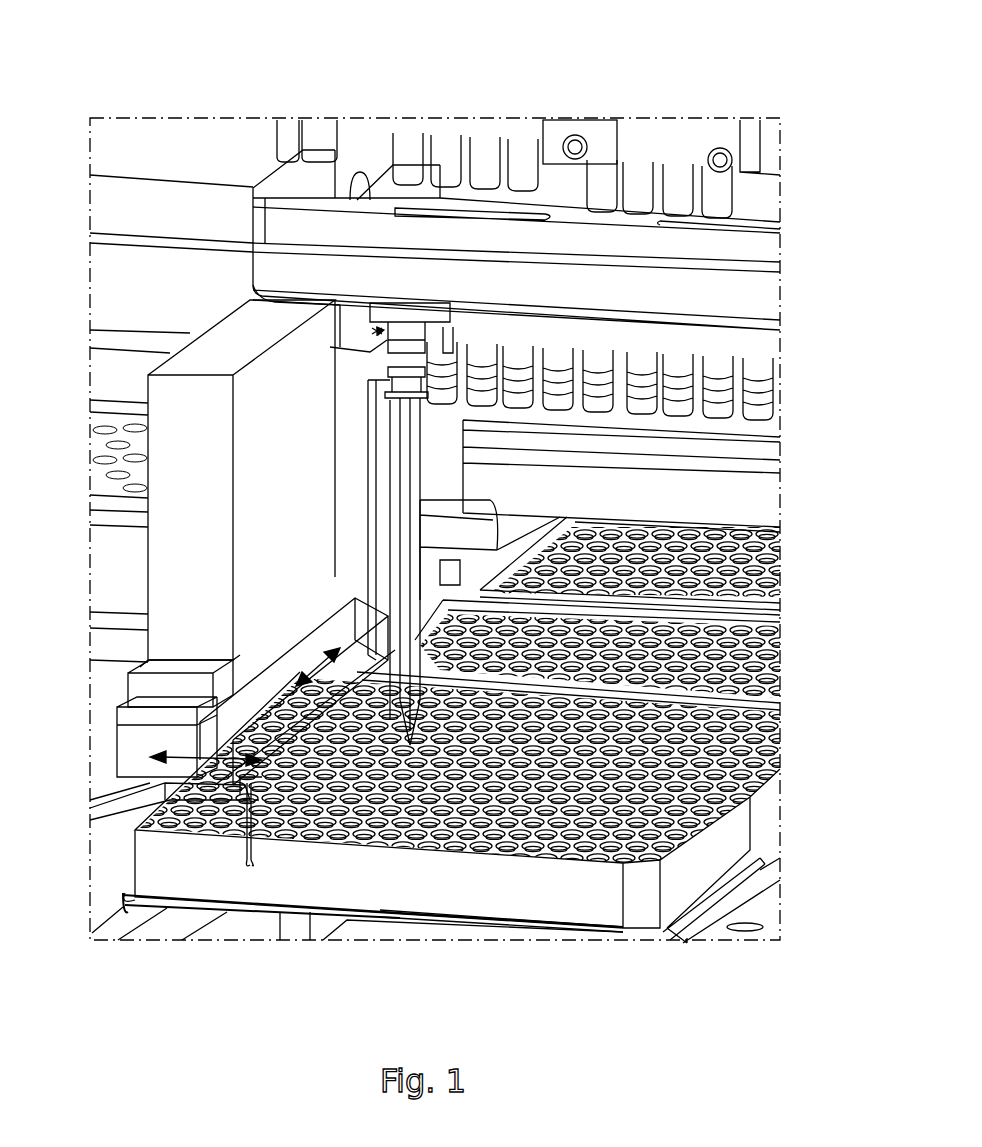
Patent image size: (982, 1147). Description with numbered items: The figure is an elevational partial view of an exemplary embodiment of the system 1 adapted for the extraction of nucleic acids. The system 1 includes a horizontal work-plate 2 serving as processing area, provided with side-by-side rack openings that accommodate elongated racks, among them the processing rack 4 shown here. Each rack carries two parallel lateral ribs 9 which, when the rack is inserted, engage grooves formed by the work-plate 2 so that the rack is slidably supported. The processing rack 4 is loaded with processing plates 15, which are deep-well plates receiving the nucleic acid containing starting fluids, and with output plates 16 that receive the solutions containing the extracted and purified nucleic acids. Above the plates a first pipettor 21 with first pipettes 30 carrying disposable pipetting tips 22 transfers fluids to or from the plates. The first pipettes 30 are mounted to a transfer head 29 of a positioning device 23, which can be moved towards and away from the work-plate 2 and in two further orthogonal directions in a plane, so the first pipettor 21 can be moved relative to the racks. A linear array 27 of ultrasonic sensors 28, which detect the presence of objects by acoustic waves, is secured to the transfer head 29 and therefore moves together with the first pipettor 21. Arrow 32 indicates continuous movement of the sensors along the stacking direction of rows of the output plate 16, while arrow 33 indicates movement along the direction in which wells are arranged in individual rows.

The system 1 is at (676, 80).
The work-plate 2 is at (752, 908).
The processing rack 4 is at (251, 913).
The lateral ribs 9 is at (123, 895).
The processing plates 15 is at (755, 572).
The output plates 16 is at (760, 738).
The first pipettor 21 is at (380, 335).
The disposable pipetting tips 22 is at (398, 465).
The positioning device 23 is at (316, 165).
The linear array of ultrasonic sensors 27 is at (170, 788).
The ultrasonic sensors 28 is at (249, 837).
The transfer head 29 is at (750, 292).
The first pipettes 30 is at (396, 397).
The arrow 32 is at (150, 755).
The arrow 33 is at (300, 645).